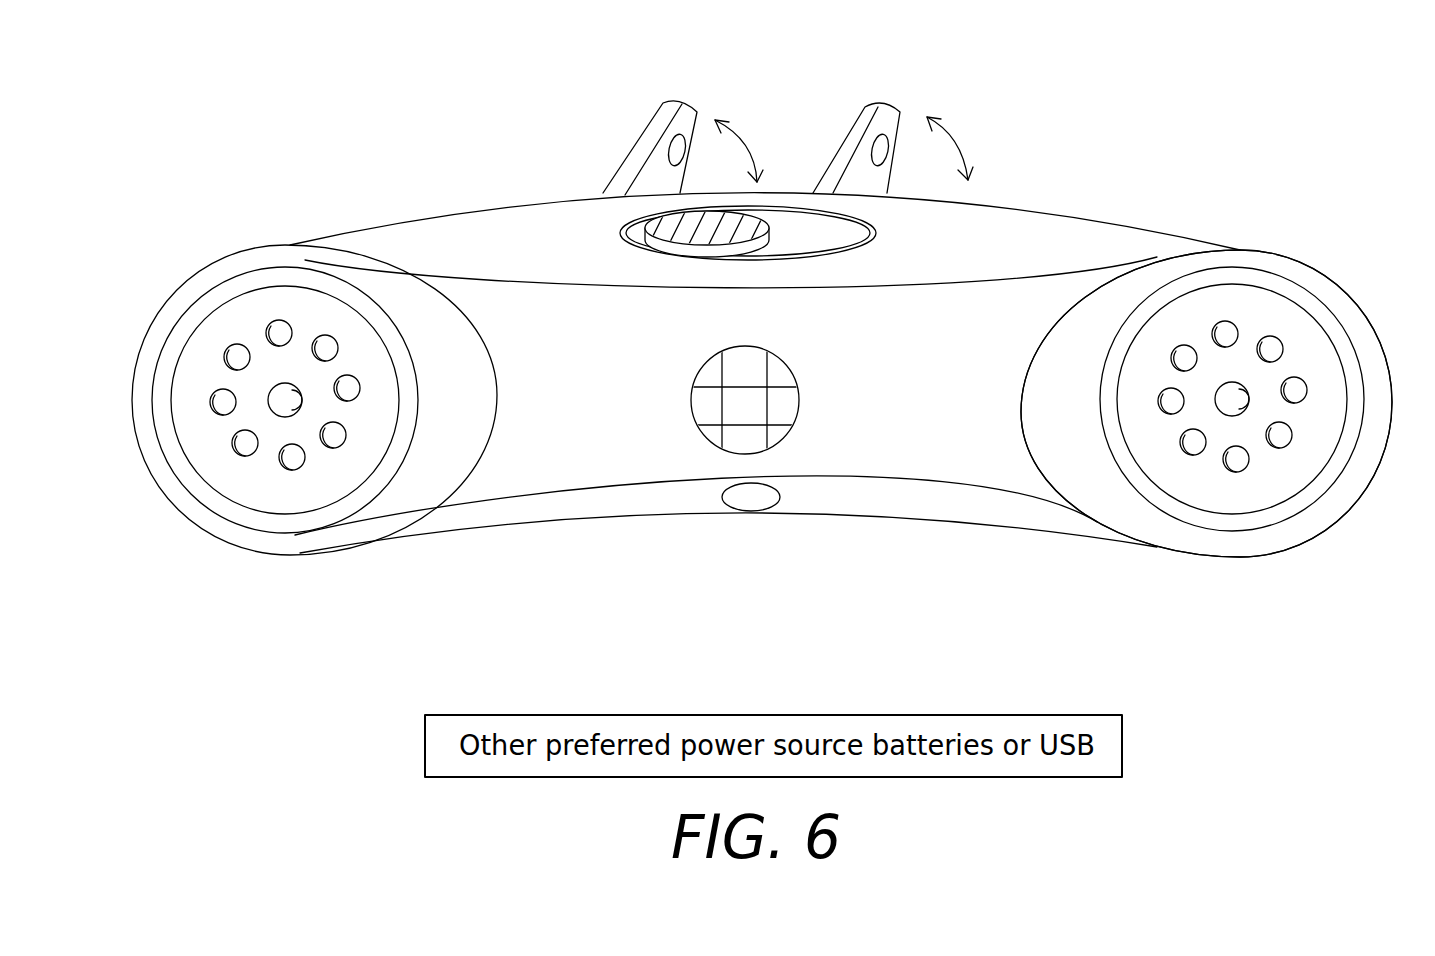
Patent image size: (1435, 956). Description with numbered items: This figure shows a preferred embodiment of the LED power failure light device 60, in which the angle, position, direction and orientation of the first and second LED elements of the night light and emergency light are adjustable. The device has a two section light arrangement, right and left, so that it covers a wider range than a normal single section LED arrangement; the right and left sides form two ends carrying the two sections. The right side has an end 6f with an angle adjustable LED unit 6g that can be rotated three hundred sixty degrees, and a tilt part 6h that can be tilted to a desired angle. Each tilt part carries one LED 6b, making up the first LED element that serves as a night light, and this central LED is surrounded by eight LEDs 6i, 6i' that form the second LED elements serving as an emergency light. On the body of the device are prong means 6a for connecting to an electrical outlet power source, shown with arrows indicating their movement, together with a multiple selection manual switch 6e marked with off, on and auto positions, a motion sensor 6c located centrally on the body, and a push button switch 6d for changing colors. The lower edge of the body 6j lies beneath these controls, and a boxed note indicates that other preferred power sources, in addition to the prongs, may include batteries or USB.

The light device housing 60 is at (462, 235).
The prong means 6a is at (693, 112).
The LED 6b is at (1240, 399).
The motion sensor 6c is at (780, 418).
The push button switch for changing colors 6d is at (757, 495).
The multiple selection manual switch 6e is at (670, 230).
The end 6f is at (1337, 279).
The angle adjustable LED unit 6g is at (1268, 270).
The tilt part 6h is at (1201, 291).
The LEDs 6i is at (258, 292).
The LEDs 6i' is at (331, 490).
The bottom surface 6j is at (1116, 545).